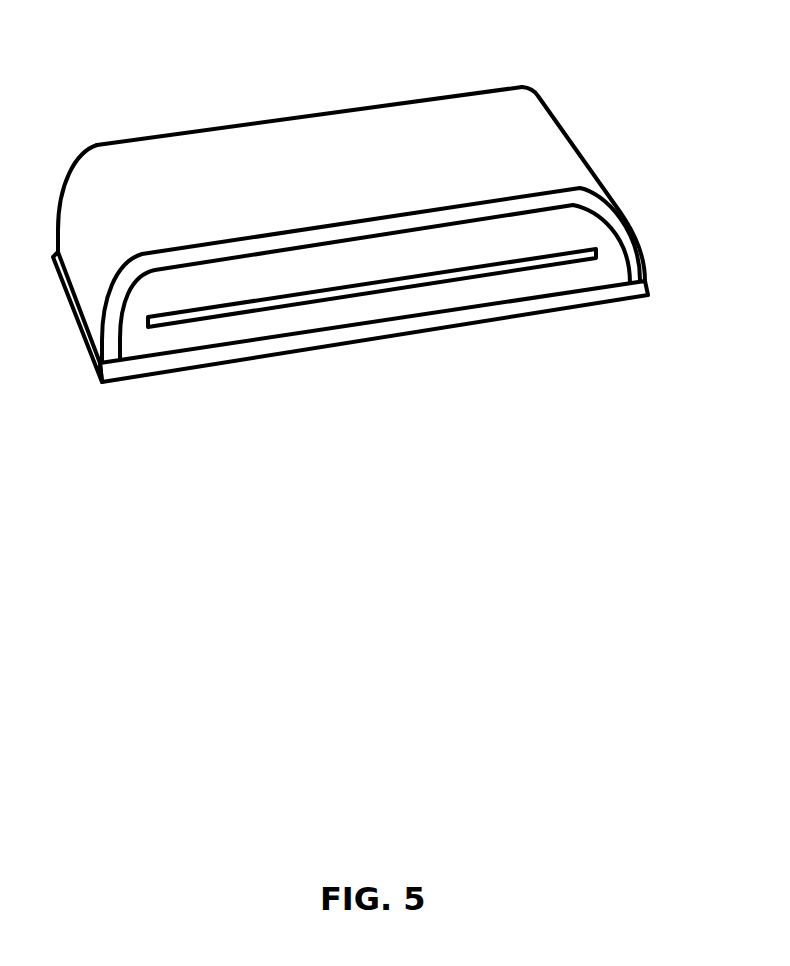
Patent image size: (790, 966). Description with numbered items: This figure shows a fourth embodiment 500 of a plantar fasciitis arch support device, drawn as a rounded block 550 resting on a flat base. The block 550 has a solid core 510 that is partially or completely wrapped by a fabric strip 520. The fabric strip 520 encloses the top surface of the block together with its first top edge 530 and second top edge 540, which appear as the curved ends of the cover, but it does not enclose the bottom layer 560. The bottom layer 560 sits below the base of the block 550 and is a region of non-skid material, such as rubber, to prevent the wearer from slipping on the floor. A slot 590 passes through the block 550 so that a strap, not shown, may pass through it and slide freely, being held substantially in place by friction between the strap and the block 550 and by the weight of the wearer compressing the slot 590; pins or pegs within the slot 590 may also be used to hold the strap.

The fourth embodiment 500 is at (369, 272).
The solid core 510 is at (407, 275).
The fabric strip 520 is at (634, 258).
The first top edge 530 is at (523, 74).
The second top edge 540 is at (74, 145).
The block 550 is at (368, 152).
The bottom layer 560 is at (330, 337).
The slot 590 is at (502, 262).